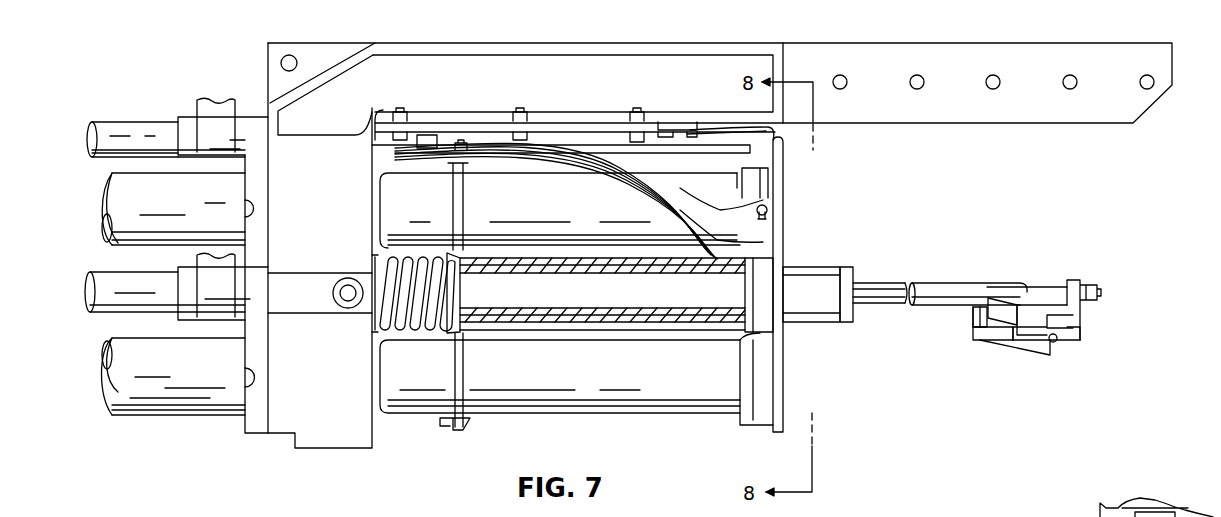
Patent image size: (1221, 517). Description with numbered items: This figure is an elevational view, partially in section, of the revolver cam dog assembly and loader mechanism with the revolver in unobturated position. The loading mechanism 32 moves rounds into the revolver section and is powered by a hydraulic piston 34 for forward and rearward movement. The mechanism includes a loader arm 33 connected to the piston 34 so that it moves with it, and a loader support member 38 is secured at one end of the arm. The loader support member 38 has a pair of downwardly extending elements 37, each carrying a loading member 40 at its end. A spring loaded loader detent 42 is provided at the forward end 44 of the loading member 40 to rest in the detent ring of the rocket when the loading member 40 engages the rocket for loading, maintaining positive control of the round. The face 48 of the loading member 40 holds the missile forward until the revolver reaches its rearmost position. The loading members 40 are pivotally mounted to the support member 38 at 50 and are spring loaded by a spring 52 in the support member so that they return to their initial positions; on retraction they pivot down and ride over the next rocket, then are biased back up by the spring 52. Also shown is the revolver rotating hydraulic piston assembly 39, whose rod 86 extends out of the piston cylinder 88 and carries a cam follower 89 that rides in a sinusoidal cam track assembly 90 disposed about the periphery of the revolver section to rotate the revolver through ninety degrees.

The loading mechanism 32 is at (1055, 360).
The loader arm 33 is at (937, 283).
The hydraulic piston 34 is at (98, 278).
The downwardly extending elements 37 is at (1078, 338).
The loader support member 38 is at (1073, 282).
The revolver rotating hydraulic piston assembly 39 is at (131, 118).
The loading member 40 is at (999, 335).
The loader detent 42 is at (973, 316).
The forward end 44 is at (966, 341).
The face 48 is at (980, 298).
The pivot 50 is at (1058, 341).
The spring 52 is at (1030, 355).
The rod 86 is at (380, 142).
The piston cylinder 88 is at (100, 158).
The cam follower 89 is at (423, 142).
The sinusoidal cam track assembly 90 is at (523, 153).